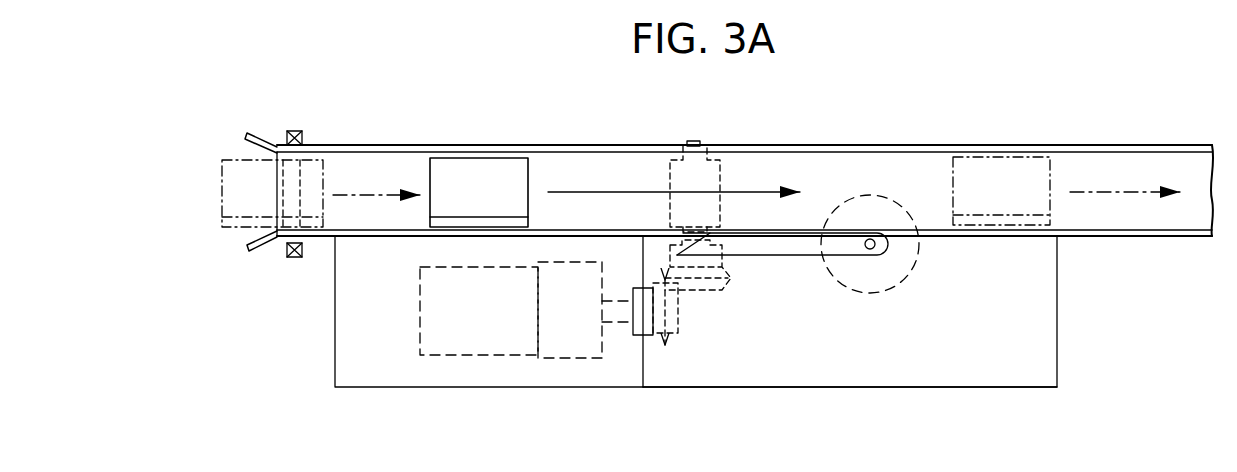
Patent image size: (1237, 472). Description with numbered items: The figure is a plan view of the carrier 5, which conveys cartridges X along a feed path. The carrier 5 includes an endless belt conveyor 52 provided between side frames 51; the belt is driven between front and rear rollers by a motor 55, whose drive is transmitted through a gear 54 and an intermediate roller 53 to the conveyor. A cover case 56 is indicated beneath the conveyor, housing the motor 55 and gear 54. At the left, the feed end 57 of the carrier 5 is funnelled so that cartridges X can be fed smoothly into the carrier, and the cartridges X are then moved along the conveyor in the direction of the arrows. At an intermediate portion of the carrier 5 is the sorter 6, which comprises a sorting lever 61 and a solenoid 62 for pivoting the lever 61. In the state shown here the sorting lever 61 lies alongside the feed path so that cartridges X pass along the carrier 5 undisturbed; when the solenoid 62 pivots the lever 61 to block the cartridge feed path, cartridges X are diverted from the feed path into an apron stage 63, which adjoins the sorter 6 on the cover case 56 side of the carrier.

The carrier 5 is at (1123, 171).
The side frames 51 is at (1090, 147).
The endless belt conveyor 52 is at (1187, 207).
The intermediate roller 53 is at (708, 171).
The gear 54 is at (680, 310).
The motor 55 is at (518, 367).
The cover case 56 is at (378, 358).
The feed end 57 is at (252, 235).
The sorter 6 is at (767, 276).
The sorting lever 61 is at (803, 244).
The solenoid 62 is at (874, 195).
The apron stage 63 is at (925, 332).
The cartridges X is at (238, 203).